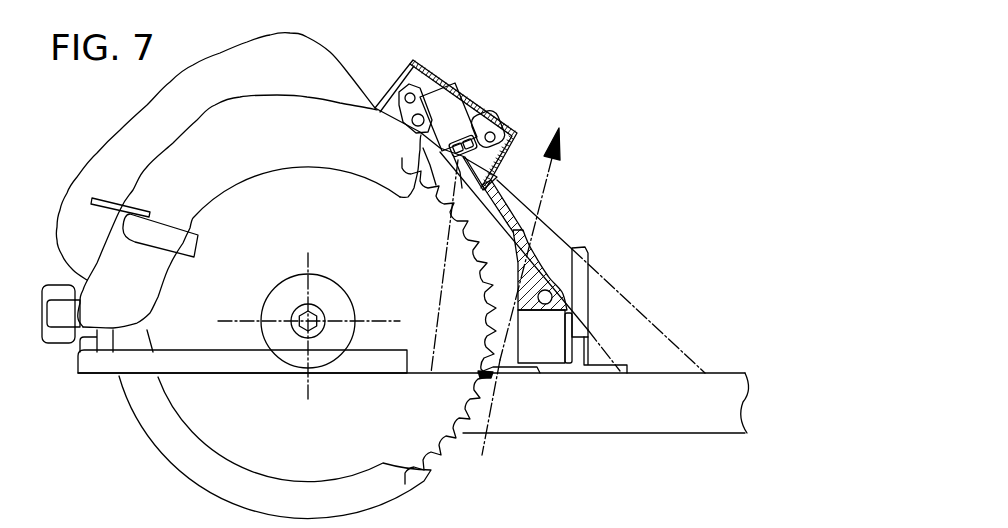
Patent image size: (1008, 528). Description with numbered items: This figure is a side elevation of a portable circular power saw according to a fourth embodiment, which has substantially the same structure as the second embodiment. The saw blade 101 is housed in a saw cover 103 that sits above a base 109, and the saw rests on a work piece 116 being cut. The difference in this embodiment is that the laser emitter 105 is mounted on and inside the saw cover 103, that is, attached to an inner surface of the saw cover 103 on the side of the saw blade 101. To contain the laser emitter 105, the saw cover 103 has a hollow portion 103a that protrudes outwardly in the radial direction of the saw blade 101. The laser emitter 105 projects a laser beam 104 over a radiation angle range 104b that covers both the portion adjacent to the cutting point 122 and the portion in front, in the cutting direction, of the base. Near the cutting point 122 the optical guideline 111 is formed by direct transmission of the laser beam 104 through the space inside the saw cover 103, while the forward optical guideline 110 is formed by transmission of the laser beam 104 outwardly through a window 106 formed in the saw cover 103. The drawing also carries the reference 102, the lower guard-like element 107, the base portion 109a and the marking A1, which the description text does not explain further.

The saw blade 101 is at (432, 462).
The riving knife / guide member 102 is at (549, 190).
The saw cover 103 is at (398, 78).
The hollow portion 103a is at (457, 65).
The laser beam 104 is at (446, 276).
The radiation angle range 104b is at (462, 250).
The laser emitter 105 is at (447, 105).
The window 106 is at (517, 161).
The lower blade guard 107 is at (195, 463).
The base 109 is at (100, 368).
The base plate foot 109a is at (537, 373).
The optical guideline 110 is at (665, 378).
The optical guideline 111 is at (507, 377).
The work piece 116 is at (712, 420).
The cutting point 122 is at (460, 387).
The cutting line A1 is at (489, 420).